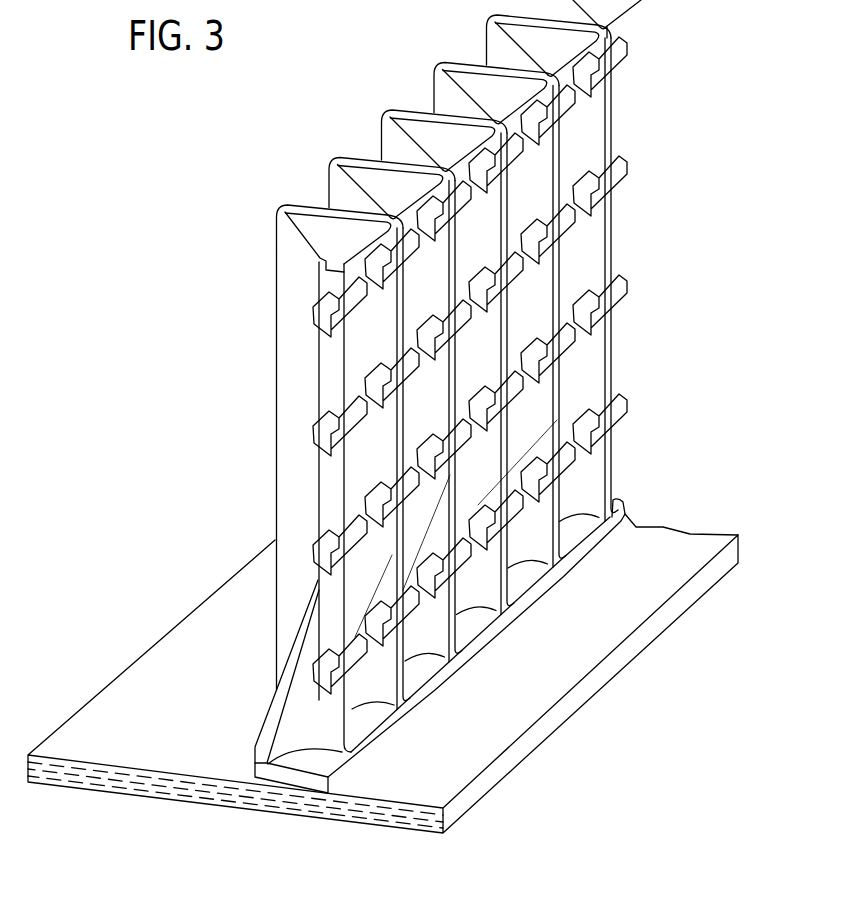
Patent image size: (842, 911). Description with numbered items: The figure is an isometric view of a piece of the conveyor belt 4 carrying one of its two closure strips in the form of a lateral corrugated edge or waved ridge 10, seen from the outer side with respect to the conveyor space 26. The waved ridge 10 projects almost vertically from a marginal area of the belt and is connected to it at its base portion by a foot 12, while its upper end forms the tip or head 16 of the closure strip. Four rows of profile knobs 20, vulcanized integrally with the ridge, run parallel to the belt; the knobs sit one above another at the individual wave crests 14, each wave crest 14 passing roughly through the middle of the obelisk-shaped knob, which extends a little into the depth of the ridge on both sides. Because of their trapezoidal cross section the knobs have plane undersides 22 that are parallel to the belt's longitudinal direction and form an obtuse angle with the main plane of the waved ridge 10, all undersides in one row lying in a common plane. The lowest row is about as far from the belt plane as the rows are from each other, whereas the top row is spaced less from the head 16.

The conveyor belt 4 is at (530, 684).
The waved ridge 10 is at (290, 494).
The foot 12 is at (360, 720).
The wave crest 14 is at (422, 381).
The tip or head of the closure strip 16 is at (388, 118).
The profile knob 20 is at (615, 184).
The plane underside 22 is at (628, 193).
The conveyor space 26 is at (230, 450).